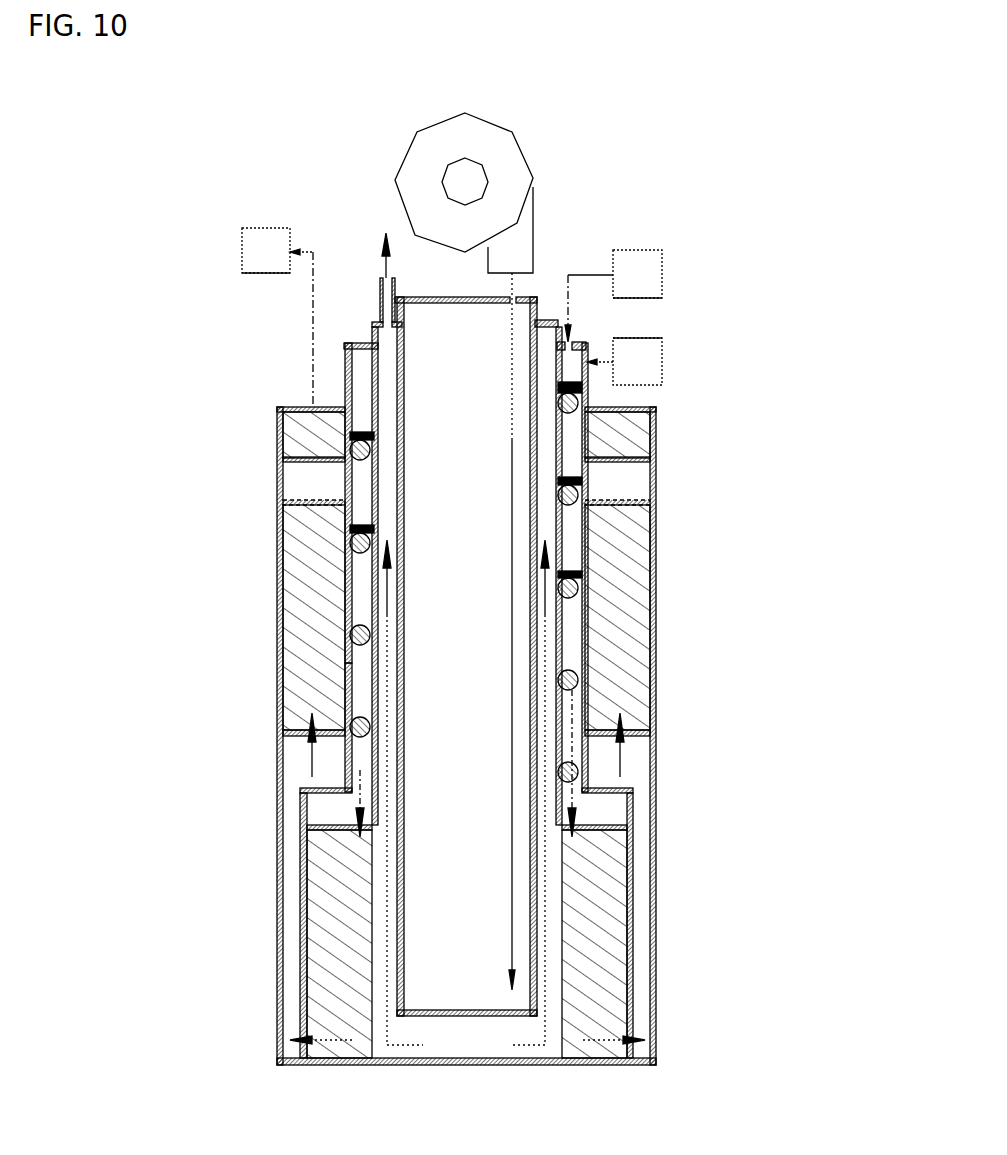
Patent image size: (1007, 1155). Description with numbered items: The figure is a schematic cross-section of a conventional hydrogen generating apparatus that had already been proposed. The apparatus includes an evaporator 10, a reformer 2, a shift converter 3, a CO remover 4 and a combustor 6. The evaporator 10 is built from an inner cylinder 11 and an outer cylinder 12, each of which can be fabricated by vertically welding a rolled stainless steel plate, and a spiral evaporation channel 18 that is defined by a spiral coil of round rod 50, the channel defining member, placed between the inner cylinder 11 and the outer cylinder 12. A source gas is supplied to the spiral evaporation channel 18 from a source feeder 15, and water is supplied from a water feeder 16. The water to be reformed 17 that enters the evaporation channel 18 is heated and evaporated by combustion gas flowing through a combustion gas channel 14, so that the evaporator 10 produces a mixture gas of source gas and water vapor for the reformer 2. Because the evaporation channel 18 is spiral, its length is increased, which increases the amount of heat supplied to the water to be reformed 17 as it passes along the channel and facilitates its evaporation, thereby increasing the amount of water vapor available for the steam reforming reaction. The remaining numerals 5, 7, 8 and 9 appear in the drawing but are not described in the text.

The reformer 2 is at (600, 995).
The shift converter 3 is at (623, 620).
The CO remover 4 is at (623, 448).
The control unit 5 is at (242, 245).
The combustor 6 is at (475, 762).
The drive unit 7 is at (537, 243).
The exhaust pipe 8 is at (383, 312).
The lower flow passage 9 is at (397, 923).
The evaporator 10 is at (347, 378).
The inner cylinder 11 is at (380, 402).
The outer cylinder 12 is at (347, 665).
The combustion gas channel 14 is at (395, 845).
The source feeder 15 is at (663, 280).
The water feeder 16 is at (663, 358).
The water to be reformed 17 is at (357, 457).
The spiral evaporation channel 18 is at (370, 685).
The round rod 50 is at (352, 552).